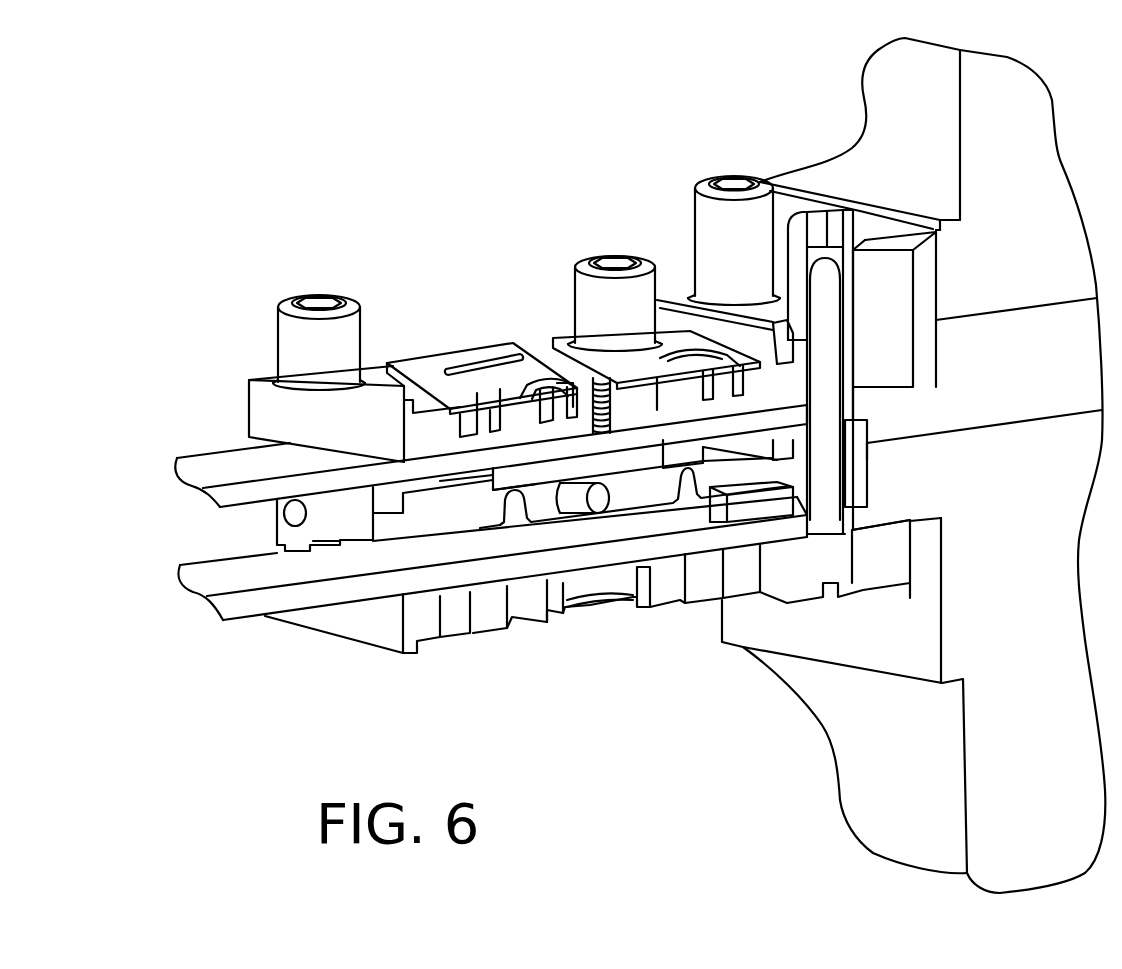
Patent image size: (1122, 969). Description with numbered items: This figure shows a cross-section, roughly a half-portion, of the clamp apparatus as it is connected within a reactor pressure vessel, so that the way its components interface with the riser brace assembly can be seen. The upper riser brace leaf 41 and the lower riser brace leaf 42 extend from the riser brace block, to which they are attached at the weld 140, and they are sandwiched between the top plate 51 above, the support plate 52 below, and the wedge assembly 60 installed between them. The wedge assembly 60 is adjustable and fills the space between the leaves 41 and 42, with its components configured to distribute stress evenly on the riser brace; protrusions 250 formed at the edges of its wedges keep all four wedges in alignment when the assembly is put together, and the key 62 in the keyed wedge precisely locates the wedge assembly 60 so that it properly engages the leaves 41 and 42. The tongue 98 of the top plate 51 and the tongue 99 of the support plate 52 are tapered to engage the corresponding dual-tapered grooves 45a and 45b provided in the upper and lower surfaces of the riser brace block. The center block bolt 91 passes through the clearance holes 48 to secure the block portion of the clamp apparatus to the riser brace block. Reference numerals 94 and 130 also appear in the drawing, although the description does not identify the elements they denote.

The upper riser brace leaf 41 is at (203, 450).
The lower riser brace leaf 42 is at (255, 620).
The dual-tapered groove 45a is at (910, 405).
The dual-tapered groove 45b is at (910, 514).
The clearance holes 48 is at (852, 427).
The top plate 51 is at (472, 348).
The support plate 52 is at (640, 607).
The wedge assembly 60 is at (252, 528).
The key 62 is at (514, 353).
The center block bolt 91 is at (832, 264).
The guide channel wall 94 is at (807, 232).
The tongue 98 is at (916, 368).
The tongue 99 is at (914, 530).
The cover strip 130 is at (801, 190).
The weld 140 is at (906, 385).
The protrusions 250 is at (343, 565).